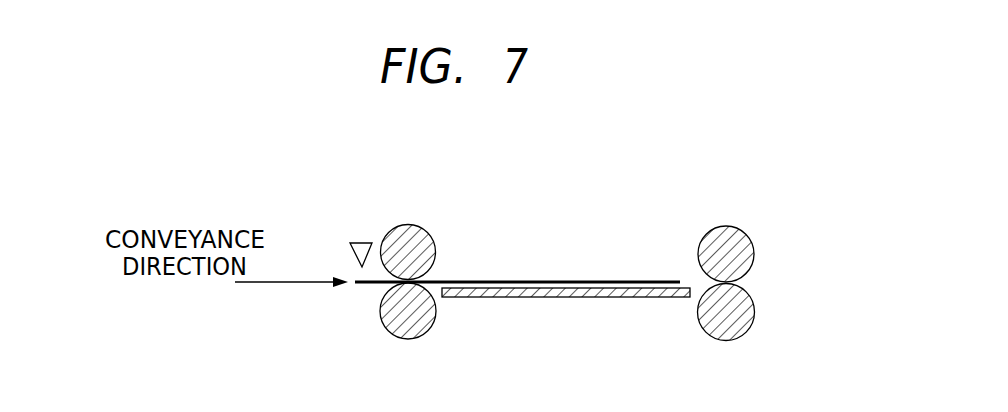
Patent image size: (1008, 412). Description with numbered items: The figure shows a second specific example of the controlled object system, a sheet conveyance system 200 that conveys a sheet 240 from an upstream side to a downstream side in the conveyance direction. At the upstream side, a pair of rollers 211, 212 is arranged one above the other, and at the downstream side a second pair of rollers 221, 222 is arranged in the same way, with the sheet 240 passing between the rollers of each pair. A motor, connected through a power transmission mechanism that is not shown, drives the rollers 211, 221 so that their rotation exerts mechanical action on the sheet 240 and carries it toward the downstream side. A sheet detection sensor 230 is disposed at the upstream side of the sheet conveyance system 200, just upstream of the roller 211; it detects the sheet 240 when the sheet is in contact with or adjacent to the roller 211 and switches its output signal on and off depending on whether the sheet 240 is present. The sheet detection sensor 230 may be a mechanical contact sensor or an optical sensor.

The sheet conveyance system 200 is at (606, 178).
The roller 211 is at (396, 226).
The roller 212 is at (388, 331).
The roller 221 is at (748, 238).
The roller 222 is at (748, 322).
The sheet detection sensor 230 is at (351, 243).
The sheet 240 is at (533, 281).